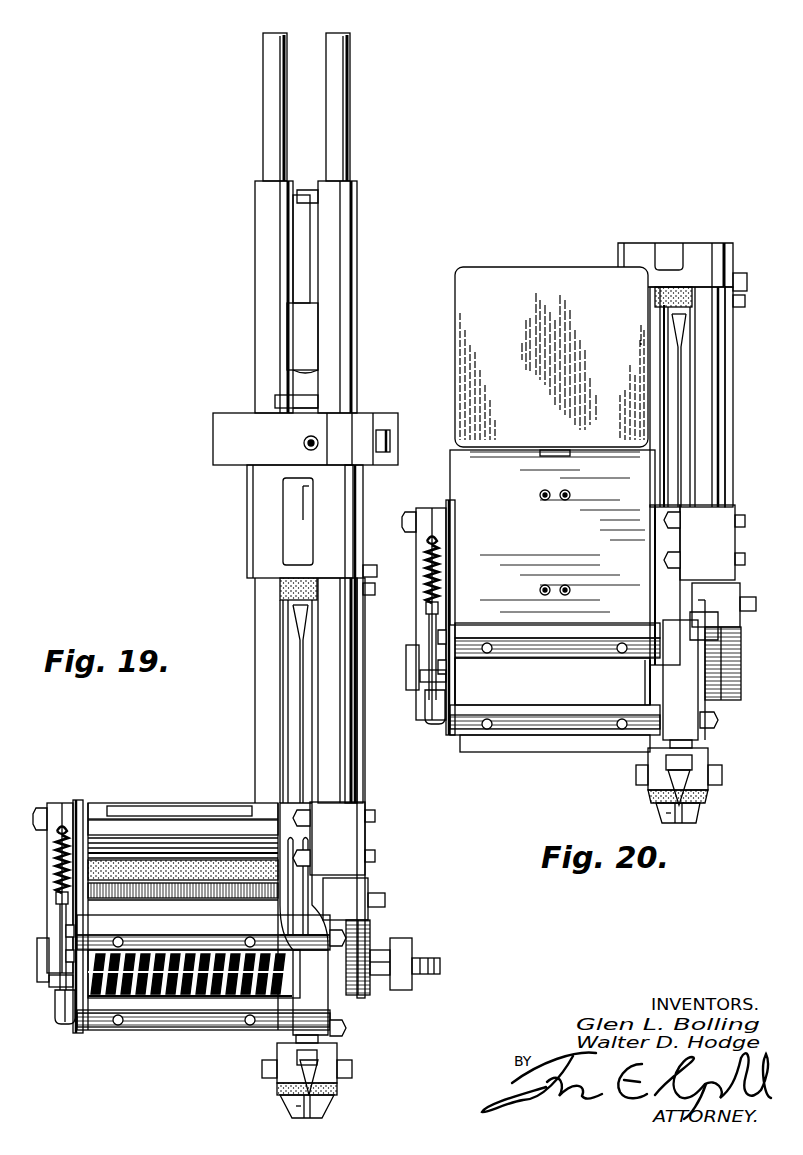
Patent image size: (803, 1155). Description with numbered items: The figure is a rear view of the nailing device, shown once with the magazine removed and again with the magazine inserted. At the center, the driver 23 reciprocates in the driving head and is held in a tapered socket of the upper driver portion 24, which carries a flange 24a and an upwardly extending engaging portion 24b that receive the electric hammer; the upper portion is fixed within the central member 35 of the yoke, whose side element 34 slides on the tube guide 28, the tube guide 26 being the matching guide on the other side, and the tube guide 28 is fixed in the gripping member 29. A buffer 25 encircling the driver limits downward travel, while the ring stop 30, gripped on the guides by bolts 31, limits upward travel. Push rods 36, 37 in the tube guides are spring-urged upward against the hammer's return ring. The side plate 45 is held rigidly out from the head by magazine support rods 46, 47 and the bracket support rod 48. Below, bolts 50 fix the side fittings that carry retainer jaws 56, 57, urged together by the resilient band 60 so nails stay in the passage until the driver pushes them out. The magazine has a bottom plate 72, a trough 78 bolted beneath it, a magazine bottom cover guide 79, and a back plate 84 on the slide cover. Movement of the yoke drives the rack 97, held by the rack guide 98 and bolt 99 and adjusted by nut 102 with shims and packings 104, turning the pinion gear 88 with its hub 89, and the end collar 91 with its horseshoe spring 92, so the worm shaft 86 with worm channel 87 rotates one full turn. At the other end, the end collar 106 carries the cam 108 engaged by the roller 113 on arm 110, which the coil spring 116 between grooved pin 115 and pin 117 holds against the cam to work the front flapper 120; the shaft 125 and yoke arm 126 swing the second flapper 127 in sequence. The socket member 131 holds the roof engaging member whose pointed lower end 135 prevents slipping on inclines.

In FIG. 19, the driver 23 is at (303, 655).
In FIG. 20, the driver 23 is at (676, 385).
In FIG. 19, the upper driver portion 24 is at (296, 416).
In FIG. 19, the flange 24a is at (288, 398).
In FIG. 19, the engaging portion 24b is at (290, 343).
In FIG. 19, the buffer 25 is at (280, 590).
In FIG. 20, the buffer 25 is at (673, 297).
In FIG. 19, the tube guide 26 is at (262, 295).
In FIG. 20, the tube guide 26 is at (652, 378).
In FIG. 19, the tube guide 28 is at (345, 260).
In FIG. 20, the tube guide 28 is at (710, 422).
In FIG. 19, the gripping member 29 is at (366, 840).
In FIG. 20, the gripping member 29 is at (735, 535).
In FIG. 19, the ring stop 30 is at (228, 445).
In FIG. 19, the bolts 31 is at (304, 444).
In FIG. 19, the side element 34 is at (350, 505).
In FIG. 20, the side element 34 is at (722, 258).
In FIG. 19, the central member 35 is at (297, 520).
In FIG. 19, the push rod 36 is at (268, 125).
In FIG. 19, the push rod 37 is at (338, 125).
In FIG. 19, the side plate 45 is at (80, 805).
In FIG. 20, the side plate 45 is at (452, 533).
In FIG. 19, the magazine support rod 46 is at (168, 934).
In FIG. 20, the magazine support rod 46 is at (580, 635).
In FIG. 19, the magazine support rod 47 is at (148, 1030).
In FIG. 20, the magazine support rod 47 is at (538, 707).
In FIG. 19, the bracket support rod 48 is at (128, 808).
In FIG. 19, the bolts 50 is at (262, 1068).
In FIG. 20, the bolts 50 is at (722, 778).
In FIG. 19, the retainer jaw 56 is at (328, 1106).
In FIG. 20, the retainer jaw 56 is at (700, 808).
In FIG. 19, the retainer jaw 57 is at (286, 1106).
In FIG. 20, the retainer jaw 57 is at (660, 808).
In FIG. 19, the band 60 is at (278, 1088).
In FIG. 20, the band 60 is at (710, 795).
In FIG. 20, the bottom plate 72 is at (545, 652).
In FIG. 20, the trough 78 is at (538, 748).
In FIG. 20, the magazine bottom cover guide 79 is at (490, 455).
In FIG. 20, the back plate 84 is at (545, 270).
In FIG. 19, the worm shaft 86 is at (198, 982).
In FIG. 20, the worm shaft 86 is at (645, 680).
In FIG. 19, the worm channel 87 is at (135, 980).
In FIG. 19, the pinion gear 88 is at (367, 940).
In FIG. 20, the pinion gear 88 is at (742, 650).
In FIG. 19, the hub 89 is at (380, 980).
In FIG. 19, the end collar 91 is at (400, 940).
In FIG. 19, the horseshoe spring 92 is at (428, 960).
In FIG. 19, the rack 97 is at (360, 668).
In FIG. 20, the rack 97 is at (732, 355).
In FIG. 19, the rack guide 98 is at (363, 888).
In FIG. 20, the rack guide 98 is at (735, 600).
In FIG. 19, the bolt 99 is at (385, 900).
In FIG. 20, the bolt 99 is at (752, 605).
In FIG. 19, the nut 102 is at (368, 596).
In FIG. 20, the nut 102 is at (744, 302).
In FIG. 19, the shims and packings 104 is at (368, 566).
In FIG. 20, the shims and packings 104 is at (744, 284).
In FIG. 19, the end collar 106 is at (42, 962).
In FIG. 20, the end collar 106 is at (410, 668).
In FIG. 19, the cam 108 is at (57, 1006).
In FIG. 20, the cam 108 is at (430, 706).
In FIG. 19, the arm 110 is at (48, 840).
In FIG. 20, the arm 110 is at (424, 515).
In FIG. 19, the roller 113 is at (52, 985).
In FIG. 20, the roller 113 is at (445, 672).
In FIG. 19, the grooved pin 115 is at (62, 826).
In FIG. 19, the coil spring 116 is at (57, 858).
In FIG. 20, the coil spring 116 is at (438, 570).
In FIG. 19, the pin 117 is at (57, 898).
In FIG. 20, the pin 117 is at (440, 607).
In FIG. 19, the front catch plate or flapper 120 is at (225, 890).
In FIG. 19, the shaft 125 is at (215, 860).
In FIG. 19, the yoke arm 126 is at (84, 905).
In FIG. 20, the yoke arm 126 is at (455, 692).
In FIG. 19, the second flapper 127 is at (168, 840).
In FIG. 20, the socket member 131 is at (668, 712).
In FIG. 19, the pointed lower end 135 is at (320, 1068).
In FIG. 20, the pointed lower end 135 is at (690, 772).